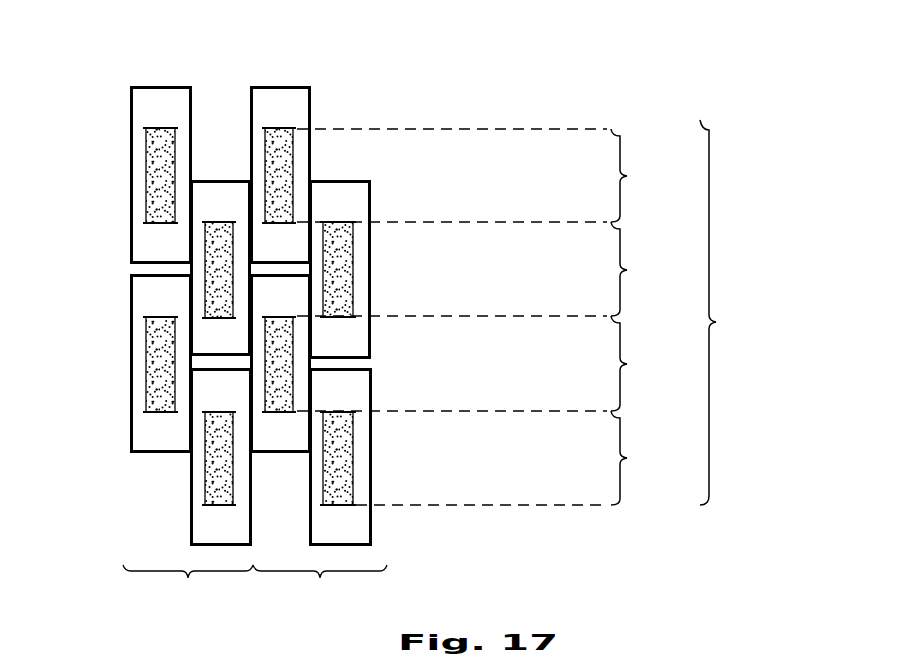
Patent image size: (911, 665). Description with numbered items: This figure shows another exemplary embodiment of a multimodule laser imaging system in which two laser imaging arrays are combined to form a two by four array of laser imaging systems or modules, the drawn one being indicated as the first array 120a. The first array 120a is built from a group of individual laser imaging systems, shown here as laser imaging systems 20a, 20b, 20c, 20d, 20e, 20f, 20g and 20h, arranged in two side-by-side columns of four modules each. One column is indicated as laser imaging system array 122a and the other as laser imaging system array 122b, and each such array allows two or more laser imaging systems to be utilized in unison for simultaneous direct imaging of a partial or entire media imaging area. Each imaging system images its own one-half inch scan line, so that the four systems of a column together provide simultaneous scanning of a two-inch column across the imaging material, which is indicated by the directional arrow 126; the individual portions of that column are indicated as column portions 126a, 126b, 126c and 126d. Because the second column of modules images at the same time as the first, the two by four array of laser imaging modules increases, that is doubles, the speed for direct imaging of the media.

The first array 120a is at (133, 58).
The laser imaging system 20a is at (146, 152).
The laser imaging system 20b is at (205, 236).
The laser imaging system 20c is at (146, 341).
The laser imaging system 20d is at (190, 510).
The capacitor 20e is at (302, 110).
The capacitor 20f is at (365, 208).
The capacitor 20g is at (305, 333).
The capacitor 20h is at (370, 456).
The column 122a is at (188, 586).
The column 122b is at (320, 586).
The directional arrow 126 is at (729, 312).
The row 126a is at (492, 175).
The row 126b is at (492, 269).
The row 126c is at (491, 363).
The row 126d is at (522, 458).